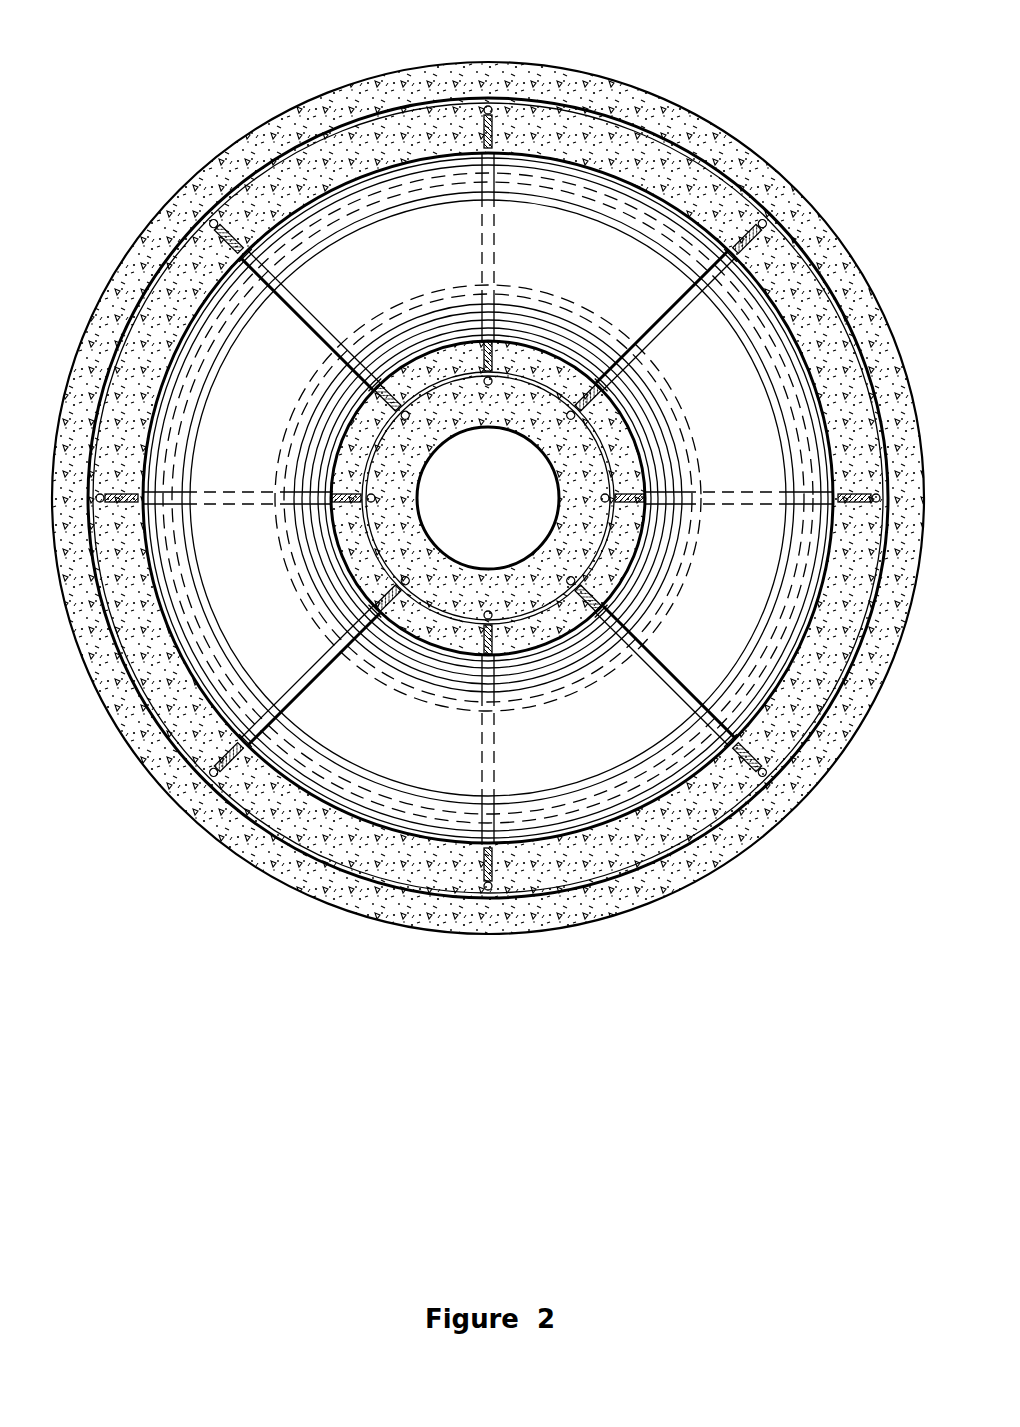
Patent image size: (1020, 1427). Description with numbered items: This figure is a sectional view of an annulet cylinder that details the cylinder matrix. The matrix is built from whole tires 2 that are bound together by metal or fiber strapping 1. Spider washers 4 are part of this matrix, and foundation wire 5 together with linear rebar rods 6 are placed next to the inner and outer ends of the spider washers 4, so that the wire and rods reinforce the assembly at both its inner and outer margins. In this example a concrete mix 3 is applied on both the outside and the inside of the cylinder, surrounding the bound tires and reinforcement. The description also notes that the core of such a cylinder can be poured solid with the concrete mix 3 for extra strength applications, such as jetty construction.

The strapping 1 is at (315, 308).
The whole tires 2 is at (577, 247).
The concrete mix 3 is at (628, 476).
The spider washers 4 is at (715, 507).
The foundation wire 5 is at (517, 623).
The linear rebar rods 6 is at (402, 592).